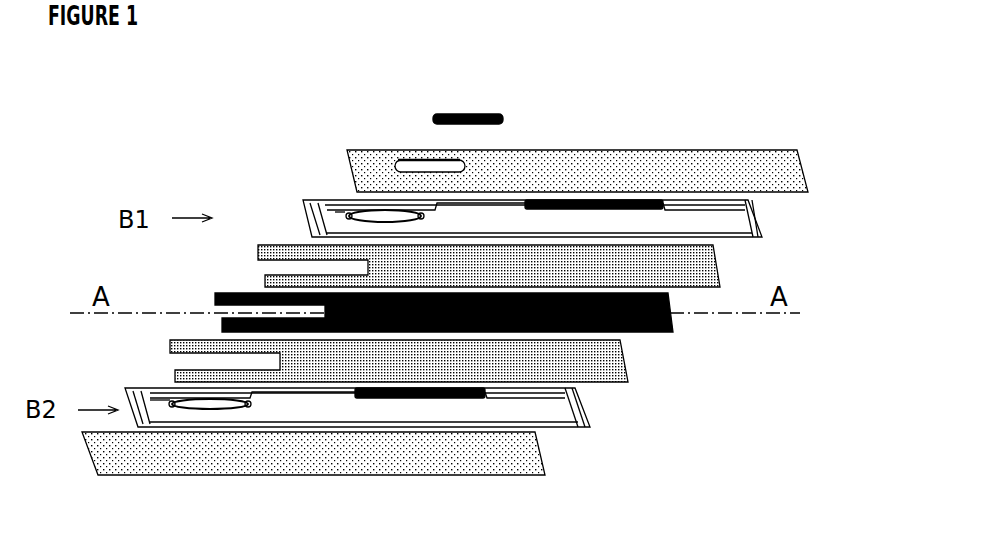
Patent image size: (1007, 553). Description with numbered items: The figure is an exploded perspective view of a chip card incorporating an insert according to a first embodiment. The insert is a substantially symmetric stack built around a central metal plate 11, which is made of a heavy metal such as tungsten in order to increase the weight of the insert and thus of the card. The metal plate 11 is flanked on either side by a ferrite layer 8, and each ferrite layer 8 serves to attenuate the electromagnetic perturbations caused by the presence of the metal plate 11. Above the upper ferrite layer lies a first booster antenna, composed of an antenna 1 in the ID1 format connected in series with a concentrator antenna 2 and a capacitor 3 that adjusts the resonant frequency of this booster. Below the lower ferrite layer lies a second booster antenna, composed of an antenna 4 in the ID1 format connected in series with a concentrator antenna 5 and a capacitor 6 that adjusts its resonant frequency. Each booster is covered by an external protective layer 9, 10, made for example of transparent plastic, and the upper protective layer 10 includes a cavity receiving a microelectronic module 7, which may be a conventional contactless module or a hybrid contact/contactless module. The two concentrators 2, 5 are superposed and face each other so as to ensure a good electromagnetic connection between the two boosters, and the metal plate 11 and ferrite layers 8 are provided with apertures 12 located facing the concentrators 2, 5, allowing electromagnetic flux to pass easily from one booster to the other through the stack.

The antenna 1 is at (748, 215).
The concentrator antenna 2 is at (362, 210).
The capacitor 3 is at (643, 205).
The antenna 4 is at (583, 405).
The concentrator antenna 5 is at (215, 407).
The capacitor 6 is at (435, 398).
The microelectronic module 7 is at (500, 114).
The ferrite layer 8 is at (713, 262).
The protective layer 9 is at (540, 458).
The protective layer 10 is at (787, 160).
The metal plate 11 is at (673, 322).
The apertures 12 is at (263, 268).